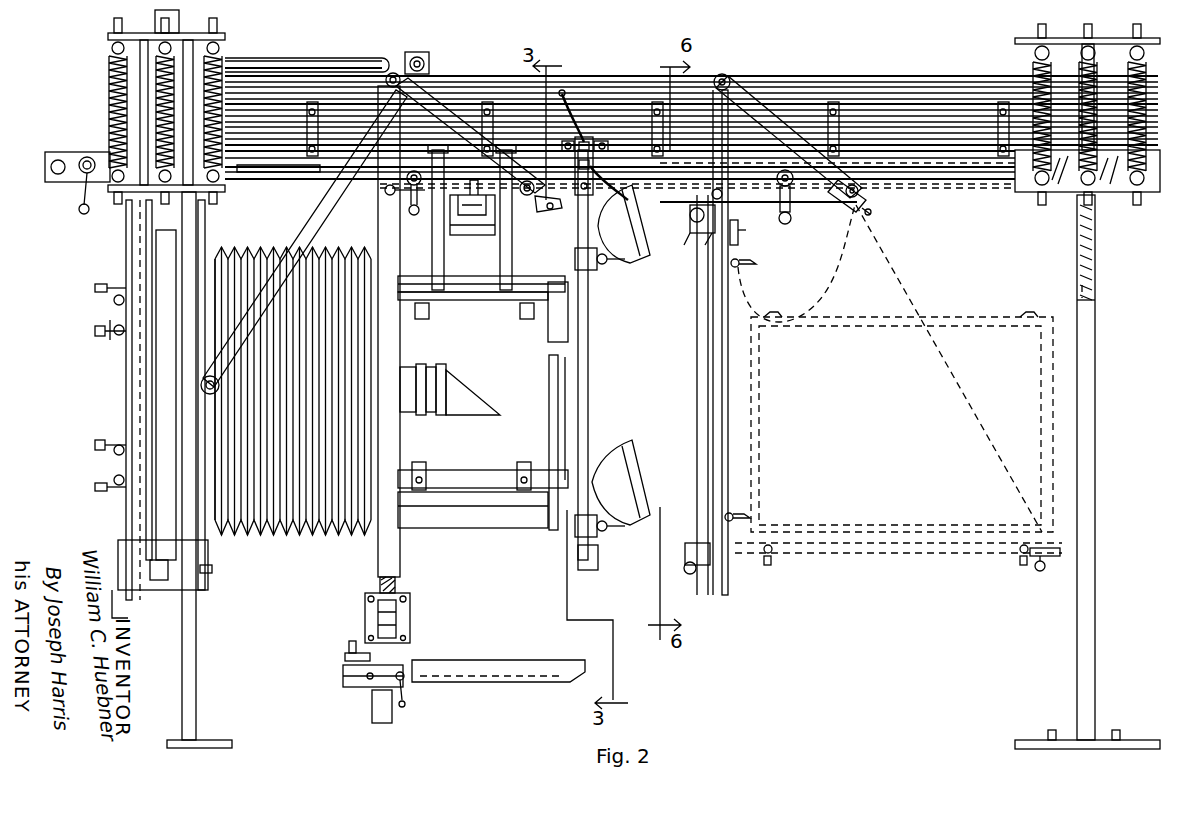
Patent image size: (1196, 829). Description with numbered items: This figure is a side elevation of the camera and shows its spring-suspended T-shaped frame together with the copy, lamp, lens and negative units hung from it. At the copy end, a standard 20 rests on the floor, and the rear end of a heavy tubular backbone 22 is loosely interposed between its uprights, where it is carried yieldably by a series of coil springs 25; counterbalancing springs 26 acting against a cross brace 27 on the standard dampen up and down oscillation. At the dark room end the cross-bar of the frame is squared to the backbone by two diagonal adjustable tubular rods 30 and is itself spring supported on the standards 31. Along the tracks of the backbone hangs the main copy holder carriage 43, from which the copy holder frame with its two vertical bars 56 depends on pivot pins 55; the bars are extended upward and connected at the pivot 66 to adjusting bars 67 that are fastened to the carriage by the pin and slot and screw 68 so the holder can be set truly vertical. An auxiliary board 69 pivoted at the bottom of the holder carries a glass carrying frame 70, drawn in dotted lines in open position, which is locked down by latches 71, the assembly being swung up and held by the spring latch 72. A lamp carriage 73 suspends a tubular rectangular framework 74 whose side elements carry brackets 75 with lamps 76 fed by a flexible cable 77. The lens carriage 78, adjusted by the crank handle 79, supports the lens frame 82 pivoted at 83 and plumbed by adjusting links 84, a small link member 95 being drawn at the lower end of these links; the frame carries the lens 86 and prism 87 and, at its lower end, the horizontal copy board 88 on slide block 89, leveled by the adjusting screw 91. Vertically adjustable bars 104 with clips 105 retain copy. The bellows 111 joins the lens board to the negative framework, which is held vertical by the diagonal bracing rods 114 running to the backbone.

The standard 20 is at (1088, 462).
The tubular backbone 22 is at (828, 88).
The coil springs 25 is at (1032, 72).
The counterbalancing springs 26 is at (1082, 232).
The cross brace 27 is at (1092, 292).
The adjustable connecting tubular rods 30 is at (292, 60).
The standards 31 is at (190, 670).
The carriage 43 is at (818, 202).
The pivot pins 55 is at (713, 195).
The vertical bars 56 is at (712, 386).
The pivotal connection 66 is at (726, 78).
The adjusting bars 67 is at (762, 110).
The pin and slot and screw 68 is at (862, 206).
The auxiliary board 69 is at (873, 548).
The glass carrying frame 70 is at (1045, 418).
The latches 71 is at (772, 556).
The spring latch 72 is at (1040, 571).
The lamp carriage 73 is at (592, 150).
The tubular rectangular framework 74 is at (584, 414).
The brackets 75 is at (584, 268).
The lamps 76 is at (626, 268).
The flexible cable 77 is at (566, 92).
The lens carriage 78 is at (443, 200).
The crank handle 79 is at (411, 205).
The lens supporting frame 82 is at (383, 533).
The pivotal connection 83 is at (386, 191).
The adjusting links 84 is at (445, 115).
The lens 86 is at (408, 385).
The prism 87 is at (465, 405).
The copy board 88 is at (470, 667).
The slide block 89 is at (398, 628).
The adjusting screw 91 is at (348, 646).
The link 95 is at (503, 218).
The vertically adjustable bars 104 is at (487, 300).
The clips 105 is at (430, 310).
The bellows 111 is at (257, 259).
The bracing and connecting rods 114 is at (320, 215).